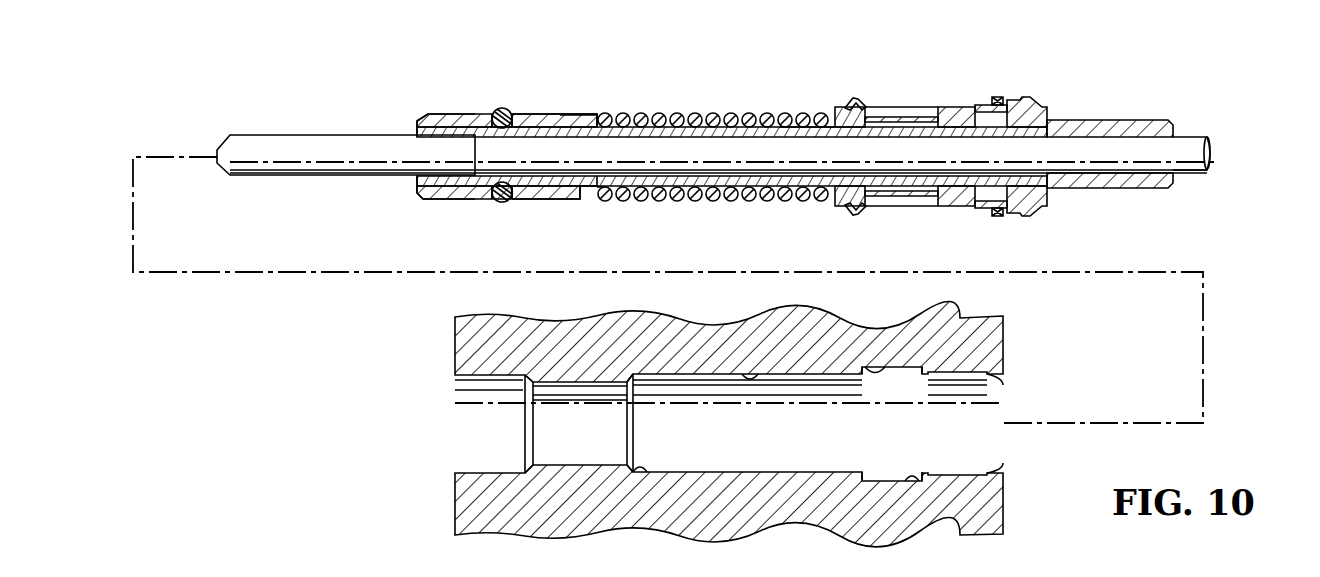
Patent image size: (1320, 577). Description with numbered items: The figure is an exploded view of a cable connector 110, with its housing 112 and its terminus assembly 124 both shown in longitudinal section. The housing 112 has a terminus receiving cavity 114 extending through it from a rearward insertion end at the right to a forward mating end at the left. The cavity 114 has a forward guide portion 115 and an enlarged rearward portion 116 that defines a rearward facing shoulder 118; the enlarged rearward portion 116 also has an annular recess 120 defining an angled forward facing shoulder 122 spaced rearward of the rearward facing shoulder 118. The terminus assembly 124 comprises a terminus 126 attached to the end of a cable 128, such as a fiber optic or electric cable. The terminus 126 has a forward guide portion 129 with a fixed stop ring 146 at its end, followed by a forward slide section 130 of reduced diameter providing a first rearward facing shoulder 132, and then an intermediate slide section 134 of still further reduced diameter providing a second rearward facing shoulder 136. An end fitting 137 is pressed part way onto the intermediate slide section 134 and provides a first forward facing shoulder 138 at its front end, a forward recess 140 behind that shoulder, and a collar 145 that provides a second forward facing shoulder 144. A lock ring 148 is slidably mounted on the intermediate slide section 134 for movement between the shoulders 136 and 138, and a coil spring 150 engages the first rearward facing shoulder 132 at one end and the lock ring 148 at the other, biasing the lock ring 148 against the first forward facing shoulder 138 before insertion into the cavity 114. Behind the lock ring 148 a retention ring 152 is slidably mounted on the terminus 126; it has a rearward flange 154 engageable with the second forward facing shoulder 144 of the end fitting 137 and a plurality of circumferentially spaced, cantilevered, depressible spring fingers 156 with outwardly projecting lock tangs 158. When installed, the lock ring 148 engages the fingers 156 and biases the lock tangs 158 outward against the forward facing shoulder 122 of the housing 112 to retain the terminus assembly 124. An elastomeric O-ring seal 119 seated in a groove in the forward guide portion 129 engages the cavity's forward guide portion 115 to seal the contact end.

The cable connector 110 is at (334, 348).
The housing 112 is at (475, 496).
The terminus receiving cavity 114 is at (680, 410).
The forward guide portion 115 is at (530, 398).
The enlarged rearward portion 116 is at (750, 374).
The rearward facing shoulder 118 is at (640, 472).
The O-ring seal 119 is at (499, 108).
The annular recess 120 is at (872, 367).
The forward facing shoulder 122 is at (912, 481).
The terminus assembly 124 is at (535, 114).
The terminus 126 is at (452, 195).
The cable 128 is at (1190, 140).
The forward guide portion 129 is at (560, 200).
The forward slide section 130 is at (730, 205).
The first rearward facing shoulder 132 is at (602, 114).
The intermediate slide section 134 is at (925, 202).
The second rearward facing shoulder 136 is at (790, 113).
The end fitting 137 is at (1160, 188).
The first forward facing shoulder 138 is at (873, 116).
The forward recess 140 is at (939, 116).
The second forward facing shoulder 144 is at (1020, 214).
The collar 145 is at (1040, 108).
The fixed stop ring 146 is at (596, 114).
The lock ring 148 is at (848, 213).
The coil spring 150 is at (660, 205).
The retention ring 152 is at (995, 216).
The rearward flange 154 is at (1000, 100).
The spring fingers 156 is at (905, 200).
The lock tangs 158 is at (850, 100).